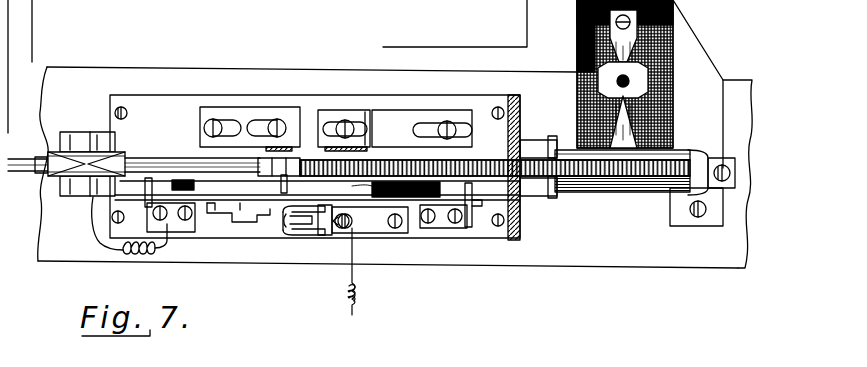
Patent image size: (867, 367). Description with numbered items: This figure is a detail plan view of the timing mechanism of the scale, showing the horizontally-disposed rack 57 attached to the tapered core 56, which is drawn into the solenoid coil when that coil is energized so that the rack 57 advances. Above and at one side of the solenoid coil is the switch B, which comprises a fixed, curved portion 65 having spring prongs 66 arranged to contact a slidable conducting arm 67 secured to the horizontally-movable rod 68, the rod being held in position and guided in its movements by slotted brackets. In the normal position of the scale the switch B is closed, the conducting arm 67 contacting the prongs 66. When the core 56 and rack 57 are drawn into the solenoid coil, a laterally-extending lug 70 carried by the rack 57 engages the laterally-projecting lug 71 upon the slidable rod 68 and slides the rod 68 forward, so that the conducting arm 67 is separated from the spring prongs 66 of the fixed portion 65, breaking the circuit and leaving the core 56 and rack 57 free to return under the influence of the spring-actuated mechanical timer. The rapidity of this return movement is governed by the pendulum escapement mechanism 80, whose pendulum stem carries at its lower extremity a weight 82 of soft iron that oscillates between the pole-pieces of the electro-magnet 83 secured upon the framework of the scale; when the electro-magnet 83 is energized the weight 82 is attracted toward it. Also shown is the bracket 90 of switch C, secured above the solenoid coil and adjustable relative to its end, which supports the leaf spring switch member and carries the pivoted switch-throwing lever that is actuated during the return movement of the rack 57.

The bracket 90 is at (250, 118).
The electro-magnet 83 is at (581, 44).
The weight 82 is at (598, 85).
The pendulum escapement mechanism 80 is at (637, 80).
The laterally-projecting lug 71 is at (193, 190).
The laterally-extending lug 70 is at (281, 185).
The horizontally-movable rod 68 is at (203, 200).
The slidable conducting arm 67 is at (255, 224).
The fixed curved portion 65 is at (284, 232).
The switch B is at (297, 235).
The spring prongs 66 is at (315, 236).
The rack 57 is at (582, 195).
The tapered core 56 is at (615, 195).